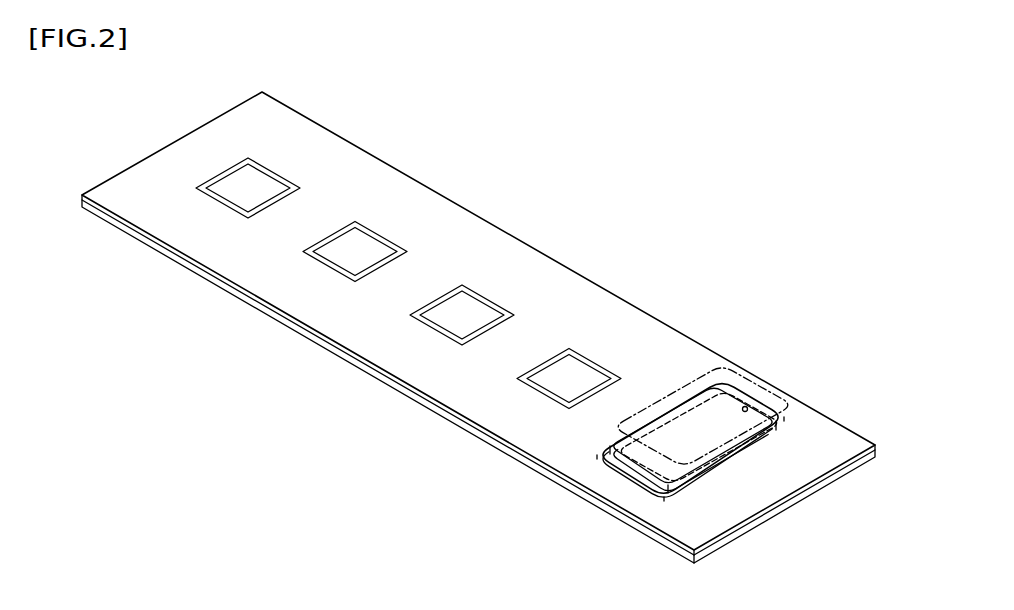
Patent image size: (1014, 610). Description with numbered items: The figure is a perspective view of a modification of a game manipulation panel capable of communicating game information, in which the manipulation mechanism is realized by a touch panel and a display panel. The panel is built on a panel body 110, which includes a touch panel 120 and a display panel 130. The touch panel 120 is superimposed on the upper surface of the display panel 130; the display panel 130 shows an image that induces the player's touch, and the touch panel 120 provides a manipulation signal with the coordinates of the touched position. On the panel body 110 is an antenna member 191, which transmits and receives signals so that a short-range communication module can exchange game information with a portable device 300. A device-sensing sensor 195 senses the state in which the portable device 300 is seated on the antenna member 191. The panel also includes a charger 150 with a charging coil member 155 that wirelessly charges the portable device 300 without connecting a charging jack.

The panel body 110 is at (455, 327).
The touch panel 120 is at (108, 197).
The display panel 130 is at (132, 233).
The charger 150 is at (751, 422).
The charging coil member 155 is at (760, 454).
The antenna member 191 is at (703, 405).
The device-sensing sensor 195 is at (745, 406).
The portable device 300 is at (613, 428).